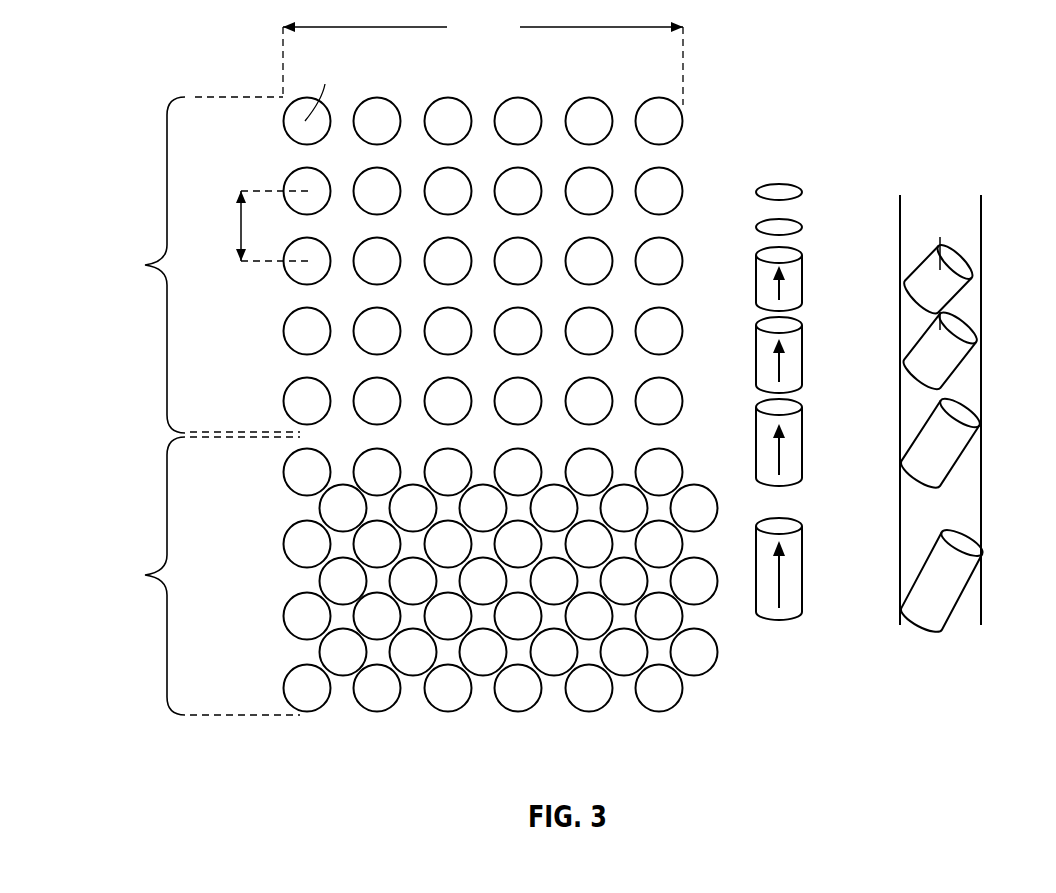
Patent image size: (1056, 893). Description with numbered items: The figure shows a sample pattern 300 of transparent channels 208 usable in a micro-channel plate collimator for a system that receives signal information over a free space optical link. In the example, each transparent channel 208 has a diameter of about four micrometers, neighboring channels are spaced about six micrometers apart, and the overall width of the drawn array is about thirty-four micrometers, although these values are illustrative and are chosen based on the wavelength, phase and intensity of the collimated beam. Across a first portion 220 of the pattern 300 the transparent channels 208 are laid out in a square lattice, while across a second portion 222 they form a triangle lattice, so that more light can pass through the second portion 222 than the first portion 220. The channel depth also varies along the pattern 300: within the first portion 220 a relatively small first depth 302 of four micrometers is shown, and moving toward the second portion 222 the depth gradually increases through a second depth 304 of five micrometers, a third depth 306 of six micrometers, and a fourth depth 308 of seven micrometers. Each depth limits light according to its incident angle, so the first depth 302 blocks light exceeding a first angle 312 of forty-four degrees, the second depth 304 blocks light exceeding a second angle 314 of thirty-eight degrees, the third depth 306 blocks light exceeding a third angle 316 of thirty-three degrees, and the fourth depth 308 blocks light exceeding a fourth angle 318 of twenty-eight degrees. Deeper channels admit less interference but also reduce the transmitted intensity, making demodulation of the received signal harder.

The sample pattern 300 is at (203, 52).
The transparent channels 208 is at (660, 121).
The first portion 220 is at (200, 265).
The second portion 222 is at (200, 576).
The first depth 302 is at (802, 280).
The second depth 304 is at (802, 353).
The third depth 306 is at (802, 443).
The fourth depth 308 is at (802, 568).
The first angle 312 is at (960, 252).
The second angle 314 is at (960, 318).
The third angle 316 is at (962, 403).
The fourth angle 318 is at (962, 534).